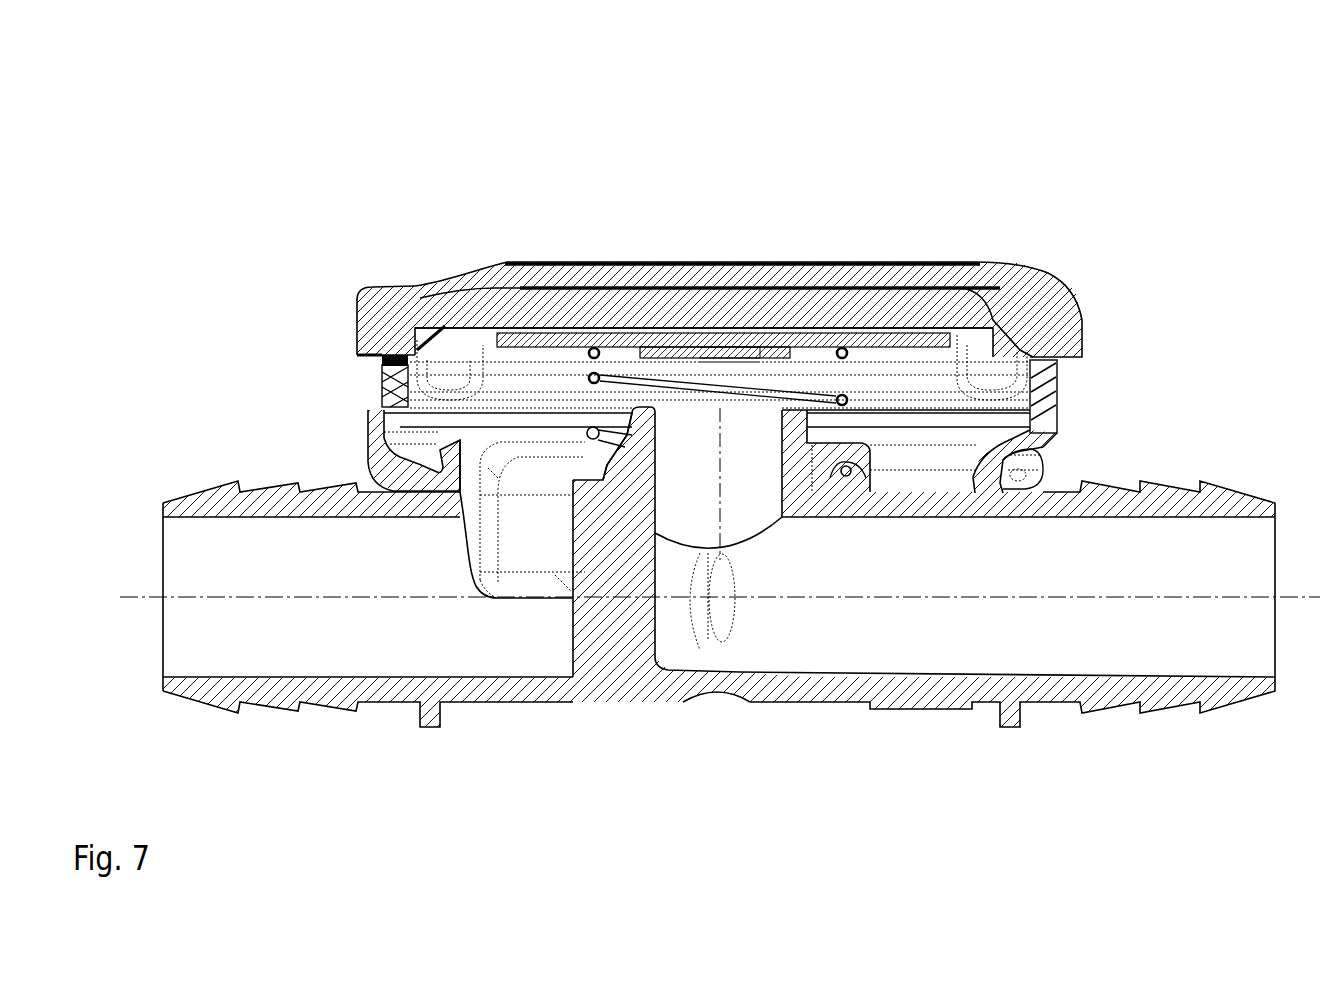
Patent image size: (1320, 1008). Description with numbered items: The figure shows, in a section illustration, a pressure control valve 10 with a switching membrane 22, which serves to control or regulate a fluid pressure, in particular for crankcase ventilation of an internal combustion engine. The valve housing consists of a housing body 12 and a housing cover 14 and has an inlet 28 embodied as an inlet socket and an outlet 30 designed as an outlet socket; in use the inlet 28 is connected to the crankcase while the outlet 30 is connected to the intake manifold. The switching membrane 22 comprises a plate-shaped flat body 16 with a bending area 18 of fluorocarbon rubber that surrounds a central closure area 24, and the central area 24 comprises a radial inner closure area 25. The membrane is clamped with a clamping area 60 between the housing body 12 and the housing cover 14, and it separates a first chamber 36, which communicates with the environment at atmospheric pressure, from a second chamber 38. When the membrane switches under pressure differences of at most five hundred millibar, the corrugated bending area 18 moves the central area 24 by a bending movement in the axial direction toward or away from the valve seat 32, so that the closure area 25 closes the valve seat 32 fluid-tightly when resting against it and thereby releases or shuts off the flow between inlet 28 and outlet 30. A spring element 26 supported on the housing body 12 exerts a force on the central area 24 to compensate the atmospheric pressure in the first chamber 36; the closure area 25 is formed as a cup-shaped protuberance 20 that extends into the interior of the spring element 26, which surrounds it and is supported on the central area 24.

The pressure control valve 10 is at (1204, 158).
The housing body 12 is at (1058, 420).
The housing cover 14 is at (1070, 288).
The plate-shaped flat body 16 is at (533, 332).
The bending area 18 is at (472, 357).
The cup-shaped protuberance 20 is at (680, 355).
The switching membrane 22 is at (585, 333).
The central closure area 24 is at (750, 358).
The radial inner closure area 25 is at (732, 368).
The spring element 26 is at (850, 400).
The inlet 28 is at (197, 492).
The outlet 30 is at (1227, 487).
The valve seat 32 is at (632, 412).
The first chamber 36 is at (475, 282).
The second chamber 38 is at (408, 400).
The clamping area 60 is at (385, 357).